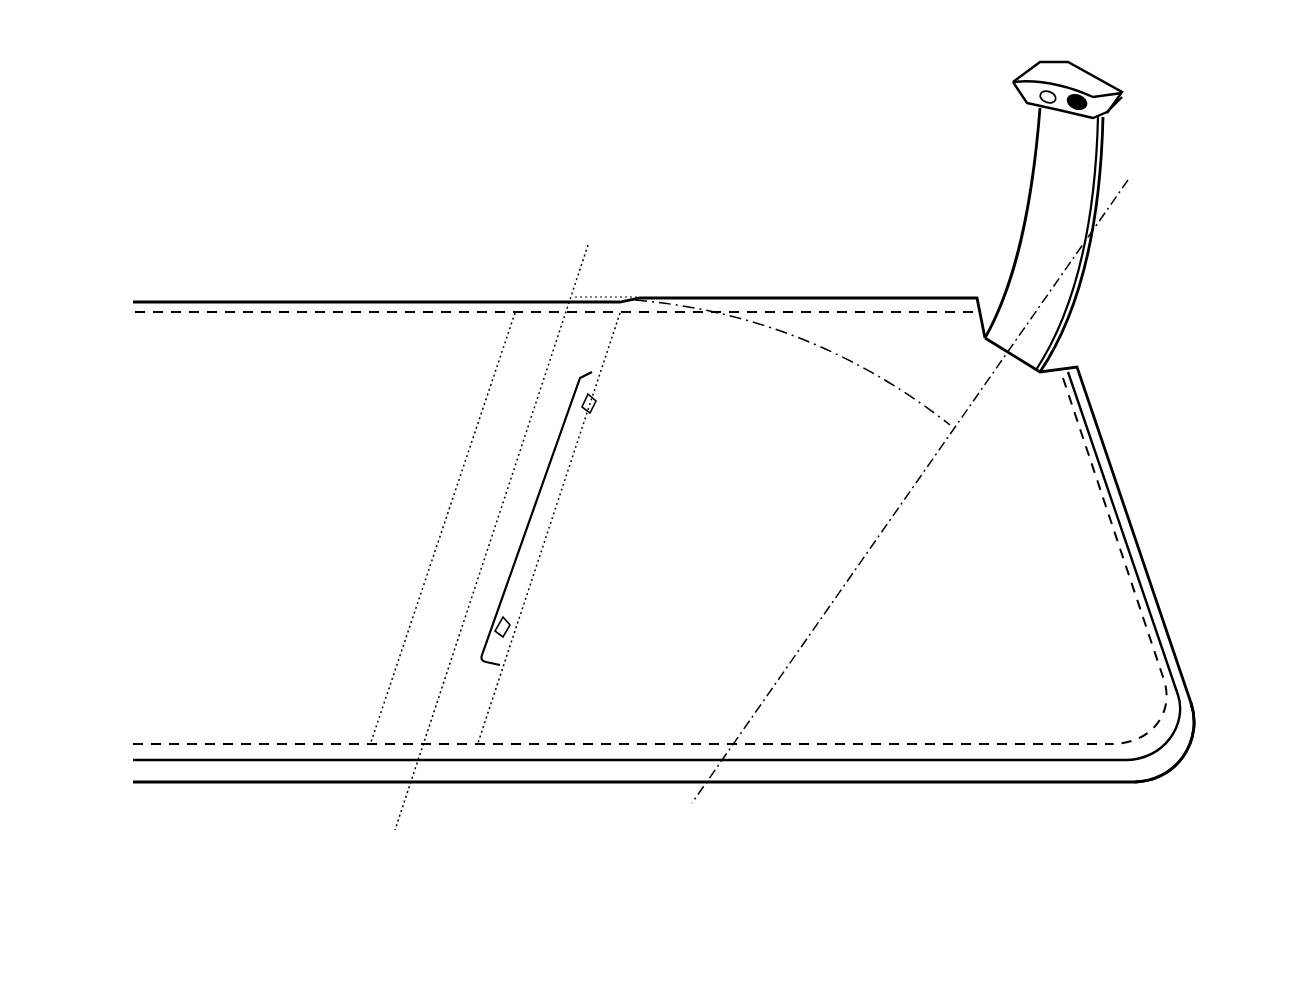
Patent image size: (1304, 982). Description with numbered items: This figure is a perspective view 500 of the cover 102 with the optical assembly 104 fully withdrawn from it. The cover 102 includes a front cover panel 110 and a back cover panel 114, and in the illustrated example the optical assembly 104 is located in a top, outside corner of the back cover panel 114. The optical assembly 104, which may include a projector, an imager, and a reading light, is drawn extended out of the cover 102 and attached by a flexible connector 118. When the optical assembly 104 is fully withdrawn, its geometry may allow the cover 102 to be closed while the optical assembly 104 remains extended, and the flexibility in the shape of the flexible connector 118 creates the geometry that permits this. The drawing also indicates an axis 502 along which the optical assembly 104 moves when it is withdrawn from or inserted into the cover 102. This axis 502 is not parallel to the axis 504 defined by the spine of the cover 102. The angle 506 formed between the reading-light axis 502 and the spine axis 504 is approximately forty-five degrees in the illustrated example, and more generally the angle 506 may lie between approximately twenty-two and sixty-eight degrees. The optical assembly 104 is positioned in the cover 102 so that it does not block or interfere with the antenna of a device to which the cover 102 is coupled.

The perspective view 500 is at (1228, 94).
The cover 102 is at (330, 274).
The optical assembly 104 is at (947, 181).
The front cover panel 110 is at (188, 718).
The back cover panel 114 is at (1067, 715).
The flexible connector 118 is at (1053, 262).
The axis 502 is at (932, 556).
The axis defined by the spine 504 is at (506, 521).
The angle 506 is at (829, 333).